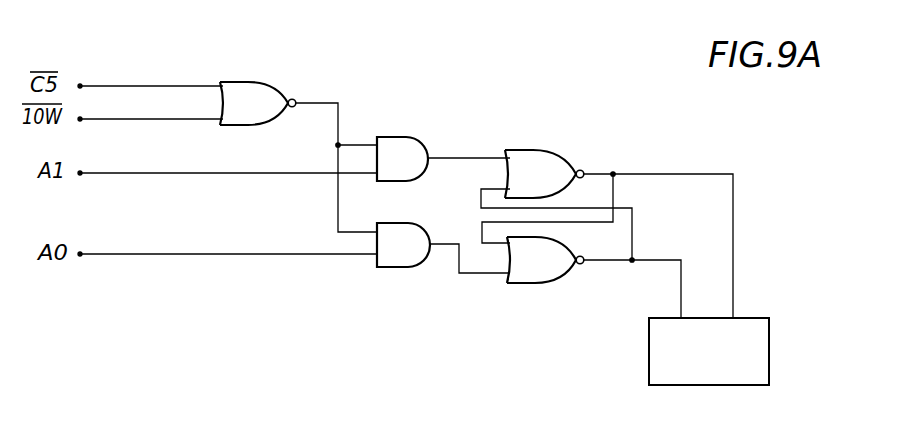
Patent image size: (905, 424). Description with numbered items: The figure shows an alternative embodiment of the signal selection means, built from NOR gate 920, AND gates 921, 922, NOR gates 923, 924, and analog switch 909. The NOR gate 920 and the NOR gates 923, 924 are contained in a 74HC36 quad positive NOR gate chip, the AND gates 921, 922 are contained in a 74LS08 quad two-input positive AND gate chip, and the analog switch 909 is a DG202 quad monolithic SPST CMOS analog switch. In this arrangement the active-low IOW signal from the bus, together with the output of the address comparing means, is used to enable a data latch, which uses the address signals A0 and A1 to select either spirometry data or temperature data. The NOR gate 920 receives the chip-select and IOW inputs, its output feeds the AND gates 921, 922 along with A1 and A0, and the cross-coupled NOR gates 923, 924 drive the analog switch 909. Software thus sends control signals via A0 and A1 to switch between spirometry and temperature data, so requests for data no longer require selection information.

The NOR gate 920 is at (270, 81).
The AND gate 921 is at (406, 136).
The AND gate 922 is at (377, 263).
The NOR gate 923 is at (548, 150).
The NOR gate 924 is at (538, 284).
The analog switch 909 is at (727, 367).